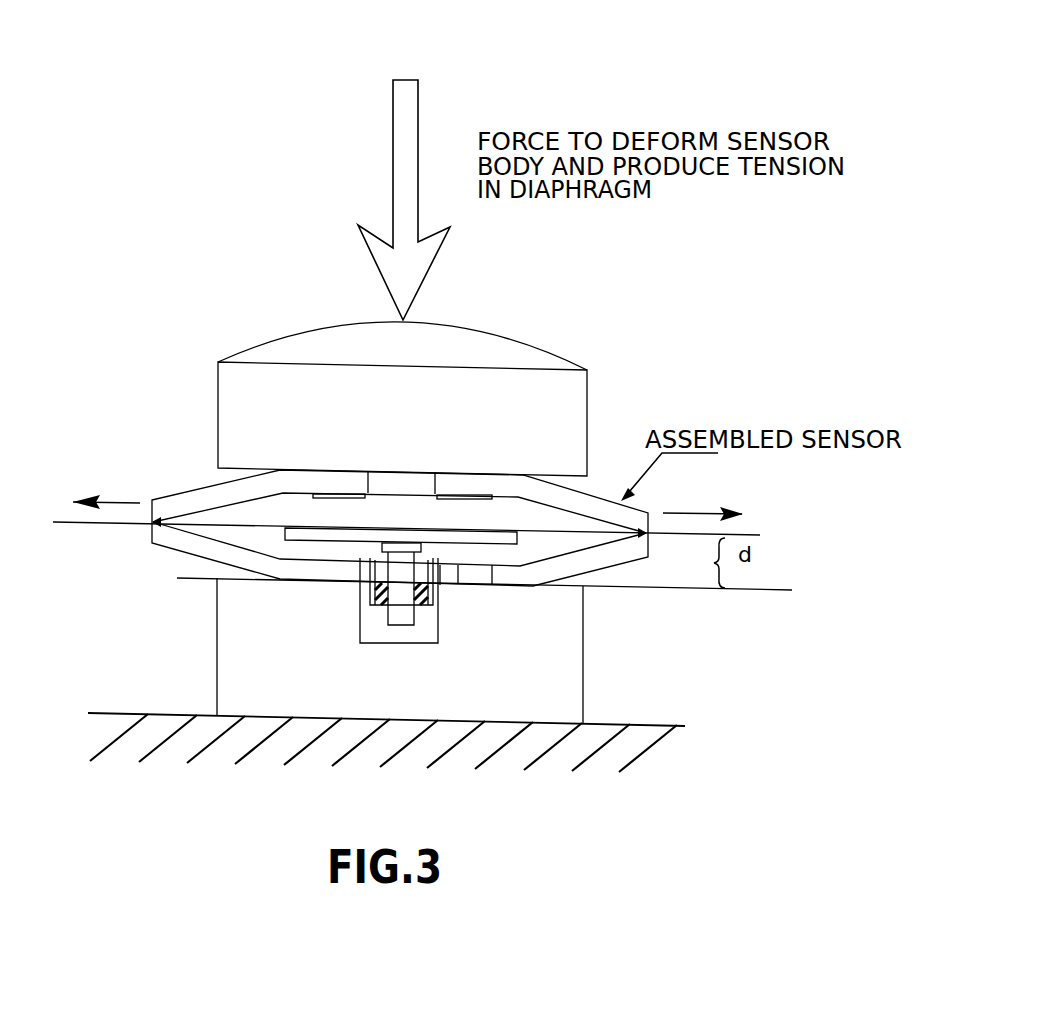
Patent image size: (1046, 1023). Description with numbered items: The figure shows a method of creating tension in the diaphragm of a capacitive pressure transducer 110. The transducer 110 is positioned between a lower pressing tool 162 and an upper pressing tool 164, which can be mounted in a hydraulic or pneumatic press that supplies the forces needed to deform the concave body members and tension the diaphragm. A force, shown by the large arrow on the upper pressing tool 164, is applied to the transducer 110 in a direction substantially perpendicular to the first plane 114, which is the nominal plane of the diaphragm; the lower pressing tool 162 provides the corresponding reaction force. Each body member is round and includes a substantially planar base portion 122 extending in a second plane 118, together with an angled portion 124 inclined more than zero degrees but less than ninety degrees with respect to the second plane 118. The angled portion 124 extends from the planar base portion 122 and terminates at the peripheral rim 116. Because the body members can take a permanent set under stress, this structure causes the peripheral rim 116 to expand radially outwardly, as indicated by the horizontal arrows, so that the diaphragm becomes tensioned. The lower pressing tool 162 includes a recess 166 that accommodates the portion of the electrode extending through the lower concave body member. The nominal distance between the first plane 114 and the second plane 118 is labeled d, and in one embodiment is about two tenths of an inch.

The pressure transducer 110 is at (156, 466).
The first plane 114 is at (752, 535).
The peripheral rim 116 is at (153, 547).
The second plane 118 is at (778, 590).
The planar base portion 122 is at (303, 568).
The angled portion 124 is at (218, 550).
The pressing tool 162 is at (572, 688).
The pressing tool 164 is at (494, 397).
The recess 166 is at (430, 645).